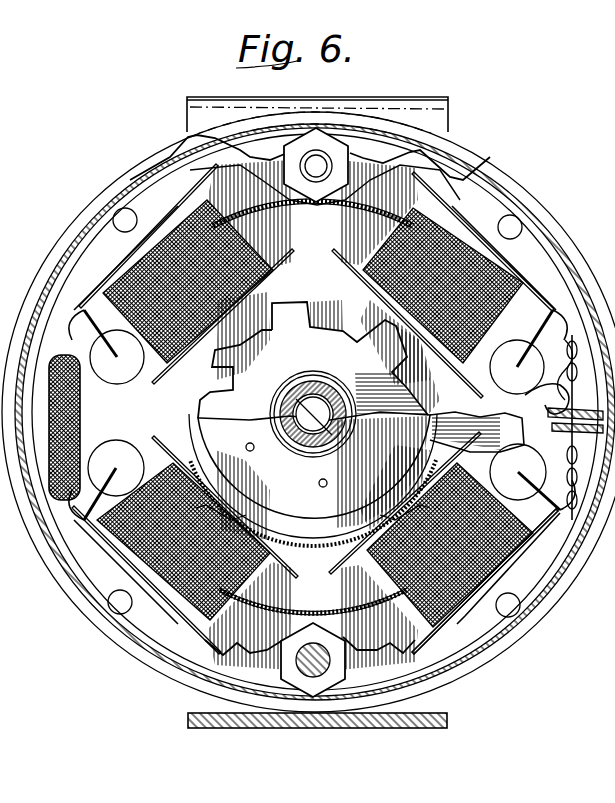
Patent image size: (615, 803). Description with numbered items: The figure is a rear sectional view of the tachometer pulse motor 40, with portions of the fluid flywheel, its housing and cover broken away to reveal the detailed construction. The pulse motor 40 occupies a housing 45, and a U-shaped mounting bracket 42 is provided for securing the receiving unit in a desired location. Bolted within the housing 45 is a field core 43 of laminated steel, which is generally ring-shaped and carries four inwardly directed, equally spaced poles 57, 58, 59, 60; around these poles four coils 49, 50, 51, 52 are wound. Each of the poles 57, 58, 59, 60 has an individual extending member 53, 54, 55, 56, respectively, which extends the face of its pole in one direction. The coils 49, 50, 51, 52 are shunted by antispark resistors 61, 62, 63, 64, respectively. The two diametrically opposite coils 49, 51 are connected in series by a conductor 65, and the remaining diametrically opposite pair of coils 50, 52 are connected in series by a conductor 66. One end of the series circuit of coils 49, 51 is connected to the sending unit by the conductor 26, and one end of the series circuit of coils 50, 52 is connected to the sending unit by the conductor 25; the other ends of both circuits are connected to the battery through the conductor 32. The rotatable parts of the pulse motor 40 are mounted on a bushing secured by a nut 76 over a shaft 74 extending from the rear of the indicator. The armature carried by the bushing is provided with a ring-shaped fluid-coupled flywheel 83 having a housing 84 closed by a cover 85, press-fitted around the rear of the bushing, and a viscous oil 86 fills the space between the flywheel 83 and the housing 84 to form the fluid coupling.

The conductor 25 is at (598, 438).
The conductor 26 is at (564, 411).
The conductor 32 is at (140, 195).
The pulse motor 40 is at (86, 650).
The U-shaped mounting bracket 42 is at (420, 97).
The field core 43 is at (525, 610).
The housing 45 is at (55, 548).
The coil 49 is at (185, 612).
The coil 50 is at (118, 386).
The coil 51 is at (430, 205).
The coil 52 is at (405, 608).
The extending member 53 is at (186, 455).
The extending member 54 is at (288, 298).
The extending member 55 is at (405, 370).
The extending member 56 is at (379, 532).
The pole 57 is at (237, 520).
The pole 58 is at (205, 360).
The pole 59 is at (382, 313).
The pole 60 is at (450, 462).
The antispark resistor 61 is at (110, 446).
The antispark resistor 62 is at (75, 427).
The antispark resistor 63 is at (521, 352).
The antispark resistor 64 is at (525, 477).
The conductor 65 is at (280, 620).
The conductor 66 is at (310, 201).
The shaft 74 is at (322, 386).
The nut 76 is at (282, 412).
The fluid-coupled flywheel 83 is at (495, 395).
The flywheel housing 84 is at (313, 487).
The cover 85 is at (280, 455).
The viscous oil 86 is at (369, 412).